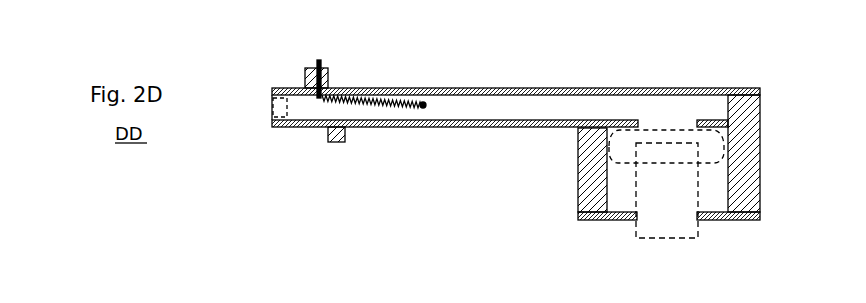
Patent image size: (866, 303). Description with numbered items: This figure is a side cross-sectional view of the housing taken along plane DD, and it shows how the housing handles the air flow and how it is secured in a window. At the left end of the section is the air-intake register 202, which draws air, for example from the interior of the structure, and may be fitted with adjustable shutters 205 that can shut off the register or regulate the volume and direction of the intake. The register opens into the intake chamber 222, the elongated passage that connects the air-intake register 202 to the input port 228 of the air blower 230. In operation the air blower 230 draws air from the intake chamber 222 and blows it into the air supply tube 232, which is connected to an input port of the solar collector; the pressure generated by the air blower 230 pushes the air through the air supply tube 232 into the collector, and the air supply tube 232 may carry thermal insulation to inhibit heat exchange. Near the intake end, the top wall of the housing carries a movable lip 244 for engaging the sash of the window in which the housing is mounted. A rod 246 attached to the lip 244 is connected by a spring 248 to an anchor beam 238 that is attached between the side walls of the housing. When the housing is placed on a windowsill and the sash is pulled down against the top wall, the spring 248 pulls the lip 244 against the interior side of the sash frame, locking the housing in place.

The air-intake register 202 is at (268, 117).
The adjustable shutters 205 is at (269, 104).
The intake chamber 222 is at (536, 102).
The input port 228 is at (673, 120).
The air blower 230 is at (723, 158).
The air supply tube 232 is at (697, 227).
The anchor beam 238 is at (424, 103).
The movable lip 244 is at (306, 68).
The rod 246 is at (320, 60).
The springs 248 is at (338, 101).